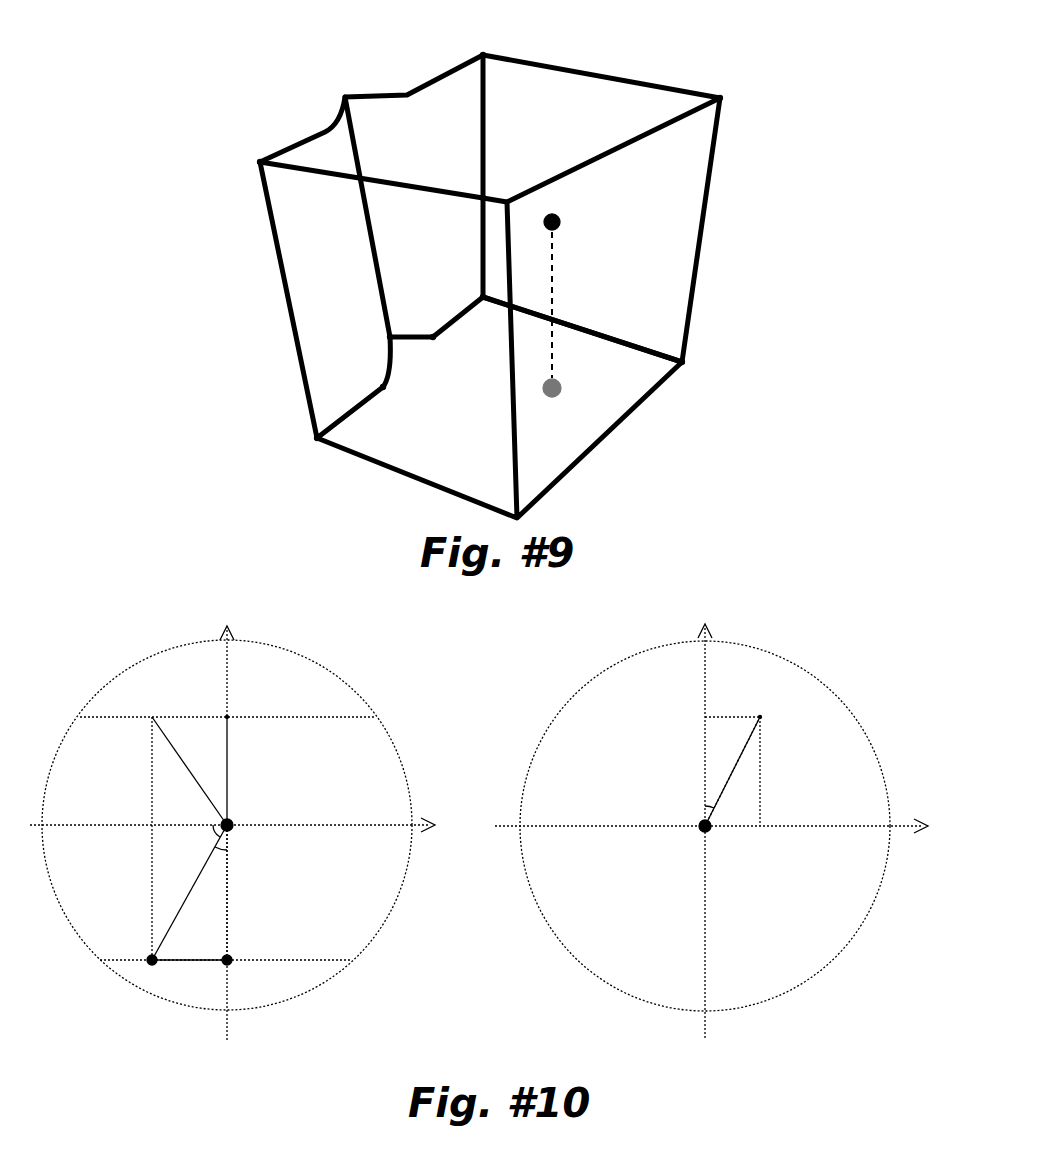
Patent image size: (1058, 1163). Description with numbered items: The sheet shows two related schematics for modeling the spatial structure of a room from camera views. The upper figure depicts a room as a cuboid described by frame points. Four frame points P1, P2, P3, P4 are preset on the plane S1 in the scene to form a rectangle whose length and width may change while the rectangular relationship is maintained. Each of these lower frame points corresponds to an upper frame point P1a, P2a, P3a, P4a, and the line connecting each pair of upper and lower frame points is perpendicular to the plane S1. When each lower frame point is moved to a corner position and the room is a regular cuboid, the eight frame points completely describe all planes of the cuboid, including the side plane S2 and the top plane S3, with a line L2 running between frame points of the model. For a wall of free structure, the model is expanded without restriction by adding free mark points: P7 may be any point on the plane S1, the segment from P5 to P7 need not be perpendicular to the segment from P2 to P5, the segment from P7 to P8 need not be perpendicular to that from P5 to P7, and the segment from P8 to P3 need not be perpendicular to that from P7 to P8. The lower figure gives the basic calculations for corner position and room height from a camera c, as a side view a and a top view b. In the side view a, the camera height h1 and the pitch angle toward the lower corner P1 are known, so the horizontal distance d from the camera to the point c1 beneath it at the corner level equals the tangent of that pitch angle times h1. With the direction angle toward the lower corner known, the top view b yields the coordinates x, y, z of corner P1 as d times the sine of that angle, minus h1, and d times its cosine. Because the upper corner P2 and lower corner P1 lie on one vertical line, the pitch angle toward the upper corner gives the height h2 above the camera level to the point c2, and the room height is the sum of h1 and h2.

In FIG. 9, the upper frame point P1a is at (502, 176).
In FIG. 9, the upper frame point P2a is at (234, 156).
In FIG. 9, the upper frame point P3a is at (500, 34).
In FIG. 9, the upper frame point P4a is at (740, 98).
In FIG. 10, the frame point P1 is at (465, 844).
In FIG. 9, the frame point P2 is at (301, 455).
In FIG. 10, the frame point P2 is at (189, 829).
In FIG. 9, the frame point P3 is at (466, 282).
In FIG. 9, the frame point P4 is at (698, 370).
In FIG. 9, the free mark point P5 is at (397, 399).
In FIG. 9, the free mark point P7 is at (367, 329).
In FIG. 9, the free mark point P8 is at (447, 351).
In FIG. 9, the plane S1 is at (518, 286).
In FIG. 9, the plane S2 is at (301, 267).
In FIG. 9, the plane S3 is at (490, 128).
In FIG. 9, the line L2 is at (582, 329).
In FIG. 9, the camera c is at (564, 305).
In FIG. 10, the camera c is at (471, 837).
In FIG. 10, the camera projection point c1 is at (225, 967).
In FIG. 10, the camera projection point c2 is at (227, 710).
In FIG. 10, the camera height h1 is at (240, 893).
In FIG. 10, the upper room height portion h2 is at (240, 771).
In FIG. 10, the horizontal distance d is at (458, 838).
In FIG. 10, the x coordinate x is at (488, 835).
In FIG. 10, the y coordinate y is at (234, 829).
In FIG. 10, the z coordinate z is at (723, 827).
In FIG. 10, the side view a is at (227, 856).
In FIG. 10, the top view b is at (705, 857).